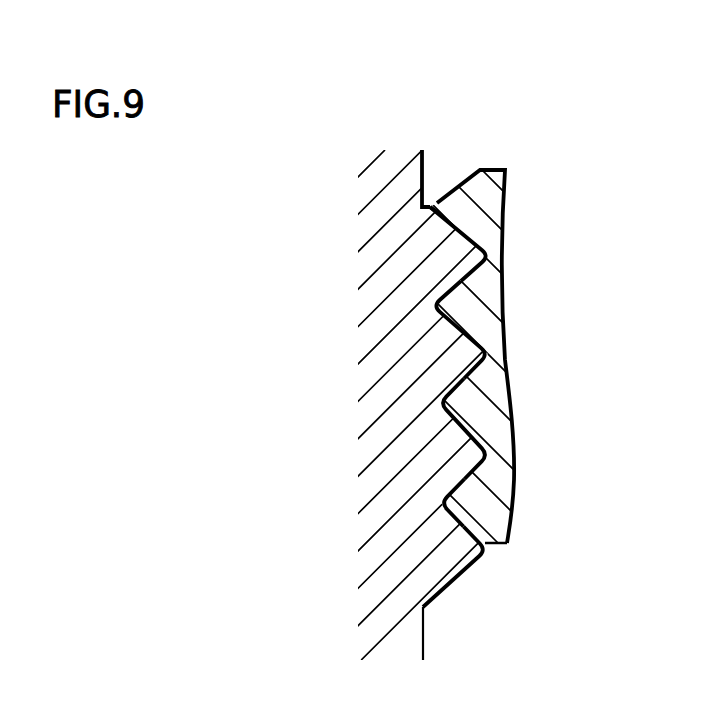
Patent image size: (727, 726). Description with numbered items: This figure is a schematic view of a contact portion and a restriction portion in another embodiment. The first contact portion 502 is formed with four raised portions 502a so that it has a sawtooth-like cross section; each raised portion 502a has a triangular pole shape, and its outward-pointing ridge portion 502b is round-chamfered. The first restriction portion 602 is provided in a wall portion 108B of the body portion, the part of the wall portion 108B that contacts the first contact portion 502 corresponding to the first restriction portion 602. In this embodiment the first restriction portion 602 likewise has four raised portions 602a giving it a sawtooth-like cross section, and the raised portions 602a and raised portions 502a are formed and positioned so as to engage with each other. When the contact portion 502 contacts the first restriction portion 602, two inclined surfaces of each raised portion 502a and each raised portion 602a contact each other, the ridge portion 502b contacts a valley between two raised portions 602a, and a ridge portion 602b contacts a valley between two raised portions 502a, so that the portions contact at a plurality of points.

The wall portion 108B is at (427, 165).
The first contact portion 502 is at (496, 168).
The raised portion 502a is at (460, 210).
The ridge portion 502b is at (445, 322).
The first restriction portion 602 is at (443, 597).
The raised portion 602a is at (462, 357).
The ridge portion 602b is at (515, 470).